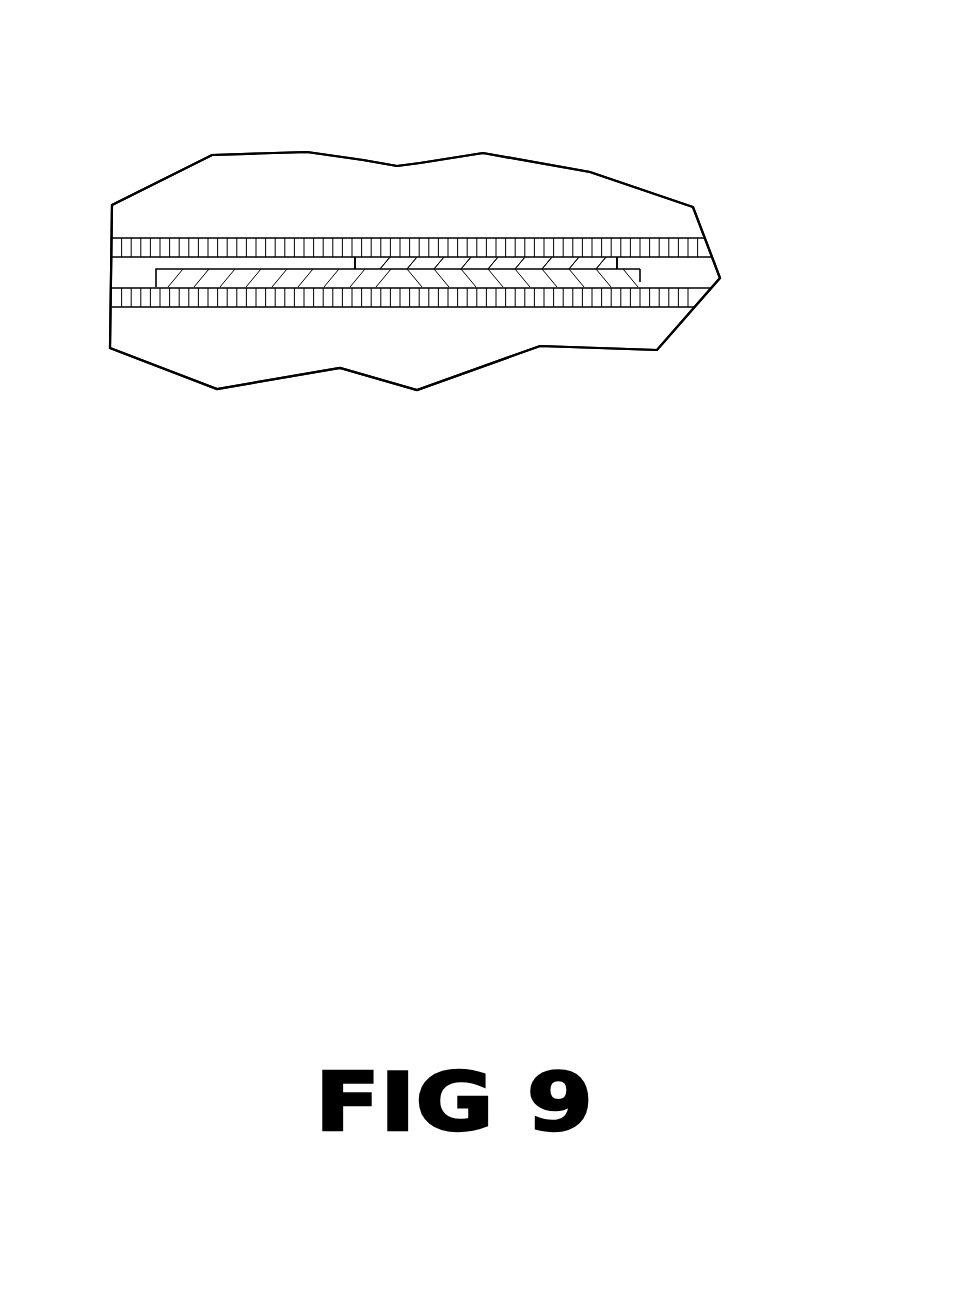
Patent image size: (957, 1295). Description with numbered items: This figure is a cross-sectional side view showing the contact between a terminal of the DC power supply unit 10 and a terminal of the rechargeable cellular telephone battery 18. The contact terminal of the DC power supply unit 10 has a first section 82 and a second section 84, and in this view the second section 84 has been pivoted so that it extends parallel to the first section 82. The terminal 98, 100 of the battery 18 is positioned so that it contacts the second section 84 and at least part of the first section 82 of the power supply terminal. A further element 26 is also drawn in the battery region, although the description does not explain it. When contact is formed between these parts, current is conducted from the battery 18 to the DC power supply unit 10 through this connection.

The DC power supply unit 10 is at (667, 363).
The battery 18 is at (163, 213).
The reinforcing strip layer 26 is at (308, 307).
The first section 82 is at (335, 280).
The second section 84 is at (489, 278).
The terminal 98 is at (365, 262).
The terminal 100 is at (365, 262).